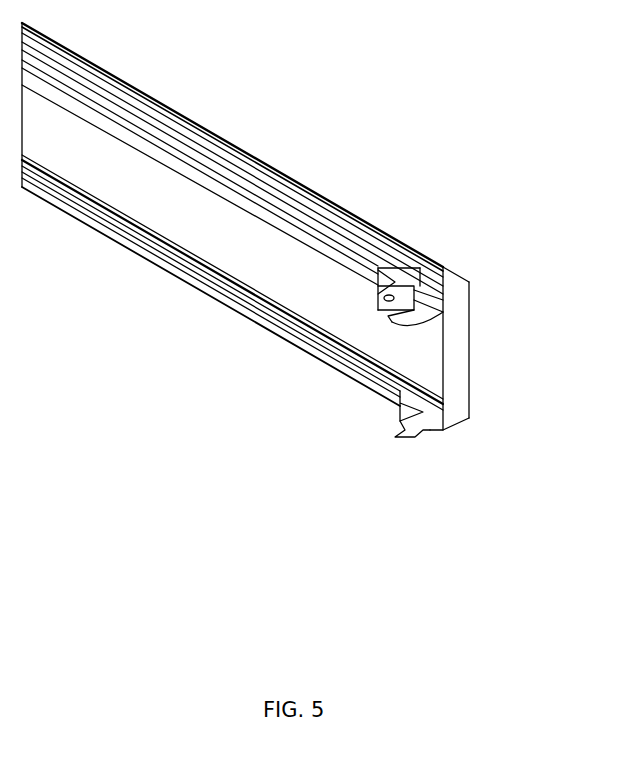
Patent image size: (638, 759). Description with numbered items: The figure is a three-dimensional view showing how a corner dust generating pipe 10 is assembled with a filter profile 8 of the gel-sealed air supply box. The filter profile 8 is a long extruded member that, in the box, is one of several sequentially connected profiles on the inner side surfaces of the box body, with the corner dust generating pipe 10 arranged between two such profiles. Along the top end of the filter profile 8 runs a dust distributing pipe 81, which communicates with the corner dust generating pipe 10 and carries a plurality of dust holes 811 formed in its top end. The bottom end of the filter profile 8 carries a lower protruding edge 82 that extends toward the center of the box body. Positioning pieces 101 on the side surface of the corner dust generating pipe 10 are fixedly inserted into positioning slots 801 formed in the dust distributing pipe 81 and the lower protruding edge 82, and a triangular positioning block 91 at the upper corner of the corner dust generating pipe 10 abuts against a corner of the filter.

The filter profile 8 is at (255, 252).
The dust distributing pipe 81 is at (277, 218).
The dust holes 811 is at (127, 115).
The lower protruding edge 82 is at (307, 352).
The positioning slots 801 is at (363, 385).
The triangular positioning block 91 is at (444, 296).
The corner dust generating pipe 10 is at (460, 380).
The positioning pieces 101 is at (418, 438).